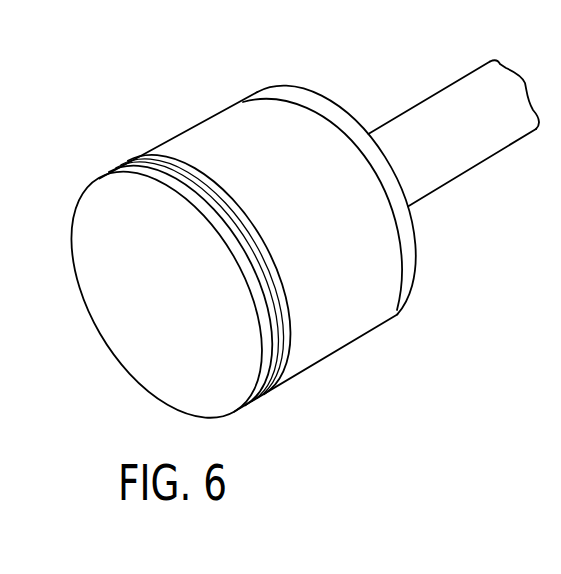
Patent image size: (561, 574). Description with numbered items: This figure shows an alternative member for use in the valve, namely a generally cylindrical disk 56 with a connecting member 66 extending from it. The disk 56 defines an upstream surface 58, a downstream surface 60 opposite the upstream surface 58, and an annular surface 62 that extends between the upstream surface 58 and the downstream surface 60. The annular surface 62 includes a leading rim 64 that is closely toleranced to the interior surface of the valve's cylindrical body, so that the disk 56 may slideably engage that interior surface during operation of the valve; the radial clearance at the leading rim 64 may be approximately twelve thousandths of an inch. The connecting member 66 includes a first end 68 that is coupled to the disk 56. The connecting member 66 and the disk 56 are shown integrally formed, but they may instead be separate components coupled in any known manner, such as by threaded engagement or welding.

The disk 56 is at (285, 234).
The upstream surface 58 is at (181, 312).
The downstream surface 60 is at (329, 99).
The annular surface 62 is at (403, 318).
The leading rim 64 is at (248, 404).
The connecting member 66 is at (426, 92).
The first end 68 is at (471, 167).